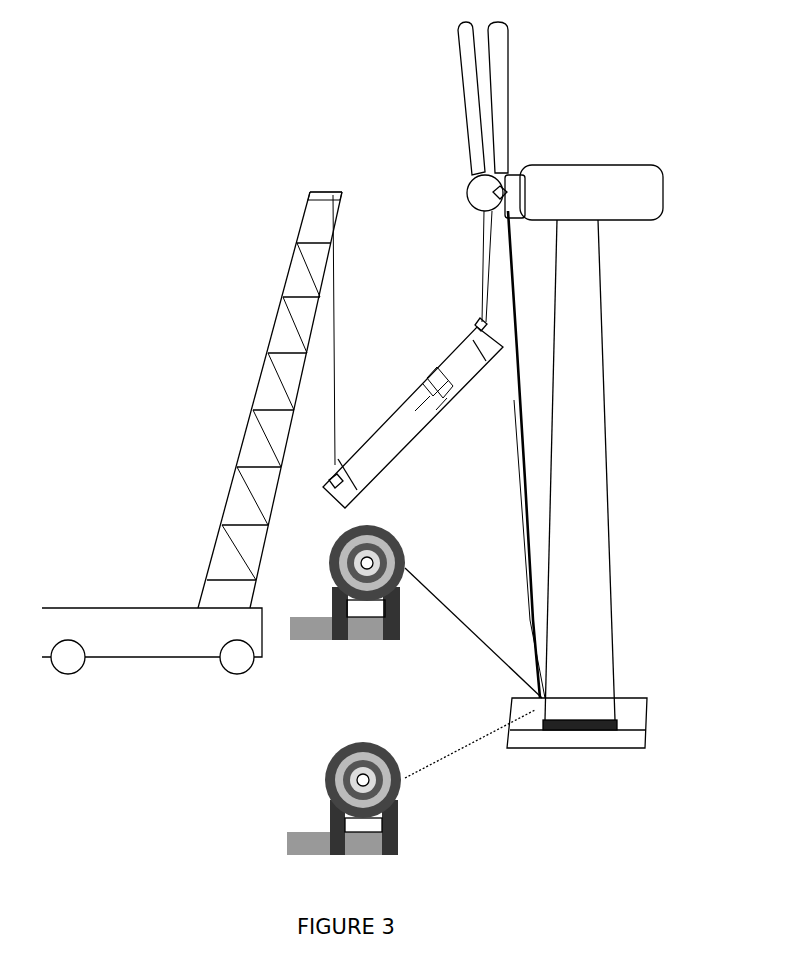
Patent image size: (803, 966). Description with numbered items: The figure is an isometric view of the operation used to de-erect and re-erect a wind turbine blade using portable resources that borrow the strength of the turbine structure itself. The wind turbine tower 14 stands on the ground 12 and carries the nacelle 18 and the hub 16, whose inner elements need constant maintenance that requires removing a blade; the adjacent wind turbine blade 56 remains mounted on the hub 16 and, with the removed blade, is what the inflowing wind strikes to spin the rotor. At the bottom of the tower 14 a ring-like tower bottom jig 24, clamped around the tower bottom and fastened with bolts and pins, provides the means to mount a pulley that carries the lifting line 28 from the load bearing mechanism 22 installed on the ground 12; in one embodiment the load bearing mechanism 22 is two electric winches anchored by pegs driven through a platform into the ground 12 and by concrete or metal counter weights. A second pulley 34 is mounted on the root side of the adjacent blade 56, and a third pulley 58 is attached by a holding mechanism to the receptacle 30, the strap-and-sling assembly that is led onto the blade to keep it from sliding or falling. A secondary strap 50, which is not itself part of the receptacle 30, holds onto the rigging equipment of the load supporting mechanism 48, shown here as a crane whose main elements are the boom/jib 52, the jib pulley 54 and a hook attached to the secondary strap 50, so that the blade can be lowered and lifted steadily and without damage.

The ground 12 is at (632, 699).
The wind turbine tower 14 is at (608, 495).
The hub 16 is at (463, 182).
The nacelle 18 is at (658, 221).
The load bearing mechanism 22 is at (320, 794).
The tower bottom jig 24 is at (596, 733).
The lifting line 28 is at (473, 640).
The receptacle 30 is at (418, 382).
The second pulley 34 is at (503, 189).
The load supporting mechanism 48 is at (92, 600).
The secondary strap 50 is at (333, 465).
The boom/jib 52 is at (298, 288).
The jib pulley 54 is at (328, 197).
The wind turbine blade 56 is at (505, 70).
The third pulley 58 is at (478, 320).